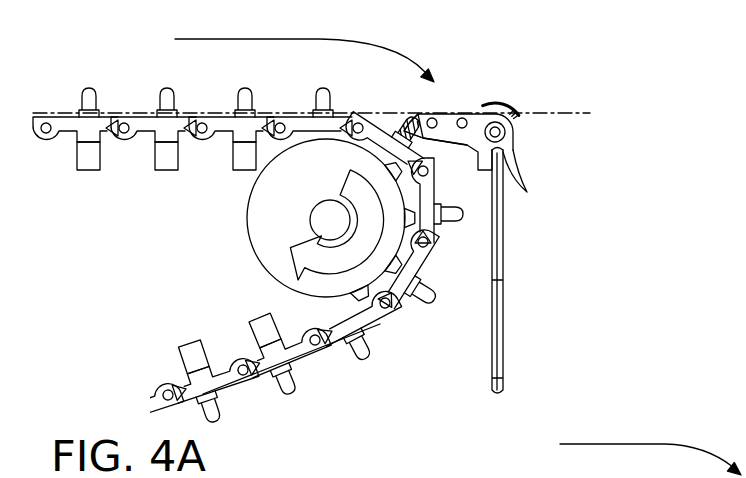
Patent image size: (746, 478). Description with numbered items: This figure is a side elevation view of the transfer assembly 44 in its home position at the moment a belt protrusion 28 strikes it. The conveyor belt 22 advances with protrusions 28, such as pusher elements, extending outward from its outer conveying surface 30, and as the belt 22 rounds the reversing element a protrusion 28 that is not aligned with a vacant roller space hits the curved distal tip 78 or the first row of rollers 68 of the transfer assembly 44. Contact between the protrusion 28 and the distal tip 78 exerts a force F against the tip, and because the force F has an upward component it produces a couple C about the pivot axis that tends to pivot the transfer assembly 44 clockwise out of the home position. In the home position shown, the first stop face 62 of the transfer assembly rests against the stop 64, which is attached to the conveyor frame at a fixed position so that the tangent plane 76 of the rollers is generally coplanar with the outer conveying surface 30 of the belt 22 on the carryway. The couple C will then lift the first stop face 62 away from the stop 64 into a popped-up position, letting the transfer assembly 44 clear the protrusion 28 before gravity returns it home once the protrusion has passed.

The conveyor belt 22 is at (222, 118).
The outer conveying surface 30 is at (302, 114).
The protrusion 28 is at (404, 112).
The first row of rollers 68 is at (430, 113).
The transfer assembly 44 is at (514, 140).
The first stop face 62 is at (527, 192).
The stop 64 is at (504, 256).
The tangent plane 76 is at (590, 113).
The distal tip 78 is at (436, 139).
The couple C is at (504, 99).
The force F is at (420, 120).